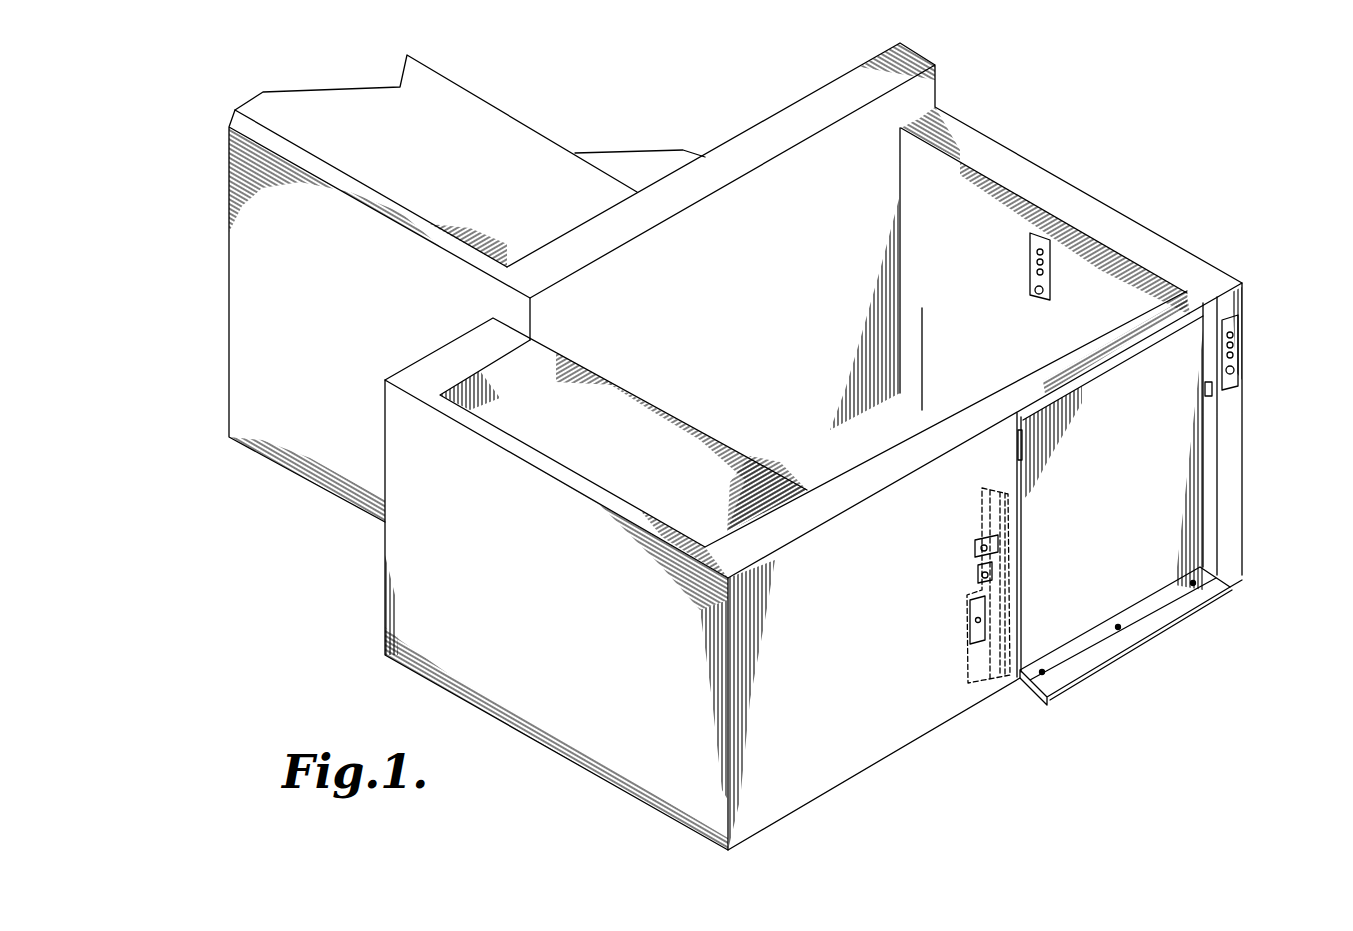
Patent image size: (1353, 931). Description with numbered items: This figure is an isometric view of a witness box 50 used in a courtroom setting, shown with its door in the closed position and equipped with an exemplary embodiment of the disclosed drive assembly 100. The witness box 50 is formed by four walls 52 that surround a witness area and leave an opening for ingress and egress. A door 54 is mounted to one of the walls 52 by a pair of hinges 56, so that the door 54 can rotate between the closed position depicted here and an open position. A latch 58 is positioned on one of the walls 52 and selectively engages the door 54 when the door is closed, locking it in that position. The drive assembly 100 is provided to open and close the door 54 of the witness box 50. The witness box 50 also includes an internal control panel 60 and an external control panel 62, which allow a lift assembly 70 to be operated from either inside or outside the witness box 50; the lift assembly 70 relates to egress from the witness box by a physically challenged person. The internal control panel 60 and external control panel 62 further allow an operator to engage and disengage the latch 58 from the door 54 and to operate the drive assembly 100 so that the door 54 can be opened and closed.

The witness box 50 is at (1176, 185).
The walls 52 is at (400, 560).
The door 54 is at (1185, 507).
The hinges 56 is at (1022, 443).
The latch 58 is at (1214, 396).
The internal control panel 60 is at (1032, 236).
The external control panel 62 is at (1235, 323).
The lift assembly 70 is at (812, 453).
The drive assembly 100 is at (963, 653).